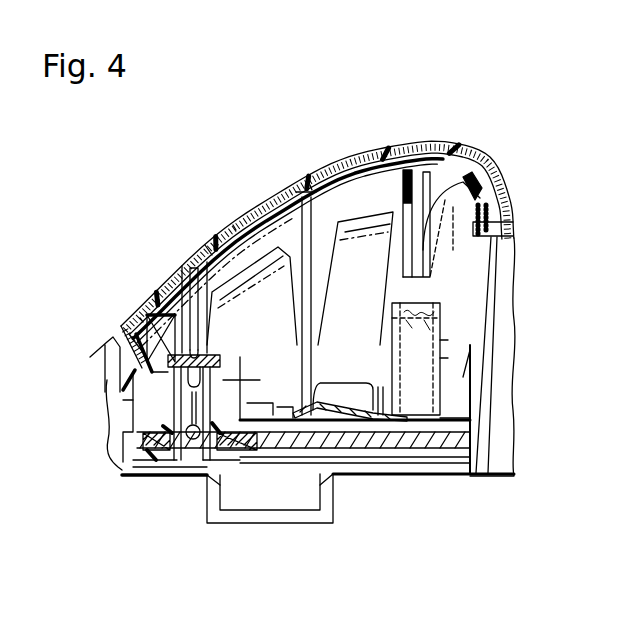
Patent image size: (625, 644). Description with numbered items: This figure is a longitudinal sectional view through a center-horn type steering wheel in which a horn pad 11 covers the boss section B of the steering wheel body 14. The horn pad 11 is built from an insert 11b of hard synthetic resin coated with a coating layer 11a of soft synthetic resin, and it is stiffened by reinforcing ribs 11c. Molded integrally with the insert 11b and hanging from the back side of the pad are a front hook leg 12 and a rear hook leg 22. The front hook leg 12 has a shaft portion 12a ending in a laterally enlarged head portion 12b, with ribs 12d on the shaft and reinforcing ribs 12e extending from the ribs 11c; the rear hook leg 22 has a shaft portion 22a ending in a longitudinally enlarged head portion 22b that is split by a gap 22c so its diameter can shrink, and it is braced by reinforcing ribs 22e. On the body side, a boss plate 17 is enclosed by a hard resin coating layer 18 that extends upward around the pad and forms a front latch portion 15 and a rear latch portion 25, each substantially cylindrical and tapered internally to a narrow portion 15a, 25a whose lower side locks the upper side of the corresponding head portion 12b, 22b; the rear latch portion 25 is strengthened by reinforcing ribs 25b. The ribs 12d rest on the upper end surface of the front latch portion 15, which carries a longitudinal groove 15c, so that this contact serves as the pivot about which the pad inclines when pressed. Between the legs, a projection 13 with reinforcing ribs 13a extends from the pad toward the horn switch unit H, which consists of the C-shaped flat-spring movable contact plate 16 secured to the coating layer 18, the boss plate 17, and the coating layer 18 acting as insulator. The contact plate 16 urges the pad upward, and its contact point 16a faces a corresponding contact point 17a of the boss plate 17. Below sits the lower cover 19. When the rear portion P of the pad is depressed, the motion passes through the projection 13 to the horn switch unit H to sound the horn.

The horn pad 11 is at (317, 178).
The coating layer 11a is at (390, 145).
The insert 11b is at (416, 52).
The reinforcing ribs 11c is at (233, 225).
The front hook leg 12 is at (177, 313).
The shaft portion 12a is at (143, 313).
The head portion 12b is at (202, 388).
The ribs 12d is at (222, 325).
The reinforcing ribs 12e is at (207, 242).
The projection 13 is at (313, 400).
The reinforcing ribs 13a is at (320, 277).
The steering wheel body 14 is at (478, 482).
The front latch portion 15 is at (172, 398).
The narrow portion 15a is at (173, 387).
The groove 15c is at (110, 360).
The movable contact plate 16 is at (375, 450).
The contact point 16a is at (248, 468).
The boss plate 17 is at (355, 450).
The contact points 17a is at (305, 470).
The coating layer 18 is at (395, 465).
The lower cover 19 is at (155, 478).
The rear hook leg 22 is at (392, 285).
The shaft portion 22a is at (430, 300).
The head portion 22b is at (440, 342).
The gap 22c is at (440, 360).
The reinforcing ribs 22e is at (467, 183).
The rear latch portion 25 is at (440, 397).
The narrow portion 25a is at (440, 318).
The reinforcing ribs 25b is at (463, 377).
The rear portion P is at (444, 120).
The boss section B is at (420, 498).
The horn switch unit H is at (434, 590).